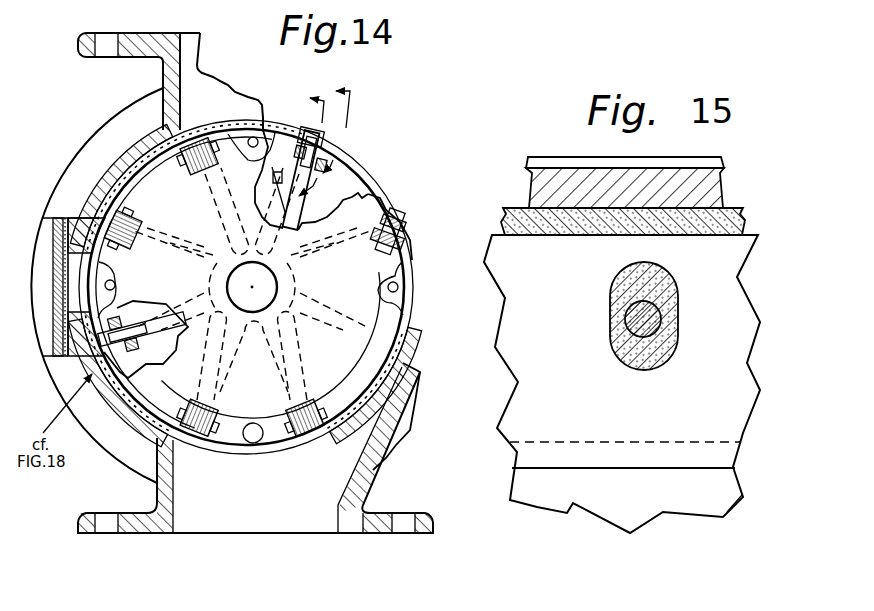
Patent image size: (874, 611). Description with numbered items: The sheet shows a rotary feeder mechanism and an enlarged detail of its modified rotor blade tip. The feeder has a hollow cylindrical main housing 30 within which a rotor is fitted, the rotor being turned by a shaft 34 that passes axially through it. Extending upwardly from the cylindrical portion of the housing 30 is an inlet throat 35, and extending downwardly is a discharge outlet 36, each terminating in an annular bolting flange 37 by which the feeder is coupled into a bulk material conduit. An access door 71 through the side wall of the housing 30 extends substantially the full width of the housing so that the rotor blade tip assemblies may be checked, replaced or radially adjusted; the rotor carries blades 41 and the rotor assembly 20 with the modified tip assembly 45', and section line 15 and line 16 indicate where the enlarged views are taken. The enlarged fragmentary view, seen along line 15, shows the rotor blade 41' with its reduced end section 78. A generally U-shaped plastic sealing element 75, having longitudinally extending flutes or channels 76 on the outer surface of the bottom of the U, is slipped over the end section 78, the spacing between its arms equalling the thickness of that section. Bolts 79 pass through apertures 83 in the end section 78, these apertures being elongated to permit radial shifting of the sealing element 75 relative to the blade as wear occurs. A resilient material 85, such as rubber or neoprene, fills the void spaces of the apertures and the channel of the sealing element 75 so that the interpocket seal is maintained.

In FIG. 14, the section line 15— 15 is at (315, 153).
In FIG. 14, the section line 16- 16 is at (345, 141).
In FIG. 14, the stator ring assembly 20 is at (153, 133).
In FIG. 14, the main housing 30 is at (132, 160).
In FIG. 14, the shaft 34 is at (267, 287).
In FIG. 14, the inlet throat 35 is at (210, 95).
In FIG. 14, the discharge outlet 36 is at (204, 525).
In FIG. 14, the annular bolting flange 37 is at (367, 528).
In FIG. 14, the support arm 41 is at (254, 254).
In FIG. 14, the modified rotor blade tip assembly 45' is at (302, 167).
In FIG. 14, the access door 71 is at (58, 273).
In FIG. 15, the plastic sealing element 75 is at (536, 190).
In FIG. 15, the flutes or channels 76 is at (687, 170).
In FIG. 15, the reduced end section 78 is at (743, 403).
In FIG. 15, the bolts 79 is at (658, 323).
In FIG. 15, the apertures 83 is at (677, 281).
In FIG. 15, the resilient material 85 is at (593, 222).
In FIG. 15, the rotor blade 41' is at (753, 513).